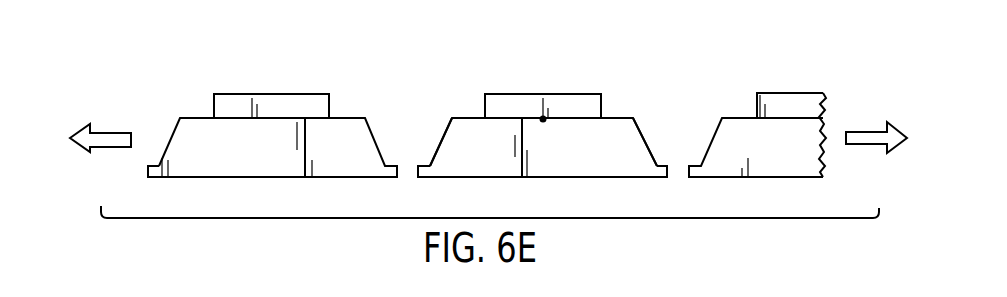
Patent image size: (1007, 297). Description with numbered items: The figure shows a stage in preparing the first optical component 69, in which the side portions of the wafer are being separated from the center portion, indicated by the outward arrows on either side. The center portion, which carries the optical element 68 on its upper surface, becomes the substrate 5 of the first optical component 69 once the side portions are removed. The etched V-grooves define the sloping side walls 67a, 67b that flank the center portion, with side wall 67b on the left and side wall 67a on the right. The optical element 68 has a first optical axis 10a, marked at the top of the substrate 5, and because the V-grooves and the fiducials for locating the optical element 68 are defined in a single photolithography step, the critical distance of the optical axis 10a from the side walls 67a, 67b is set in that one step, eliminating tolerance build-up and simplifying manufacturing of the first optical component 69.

The substrate 5 is at (588, 171).
The first optical axis 10a is at (543, 122).
The side wall 67a is at (641, 130).
The side wall 67b is at (444, 131).
The optical element 68 is at (572, 100).
The first optical component 69 is at (501, 60).